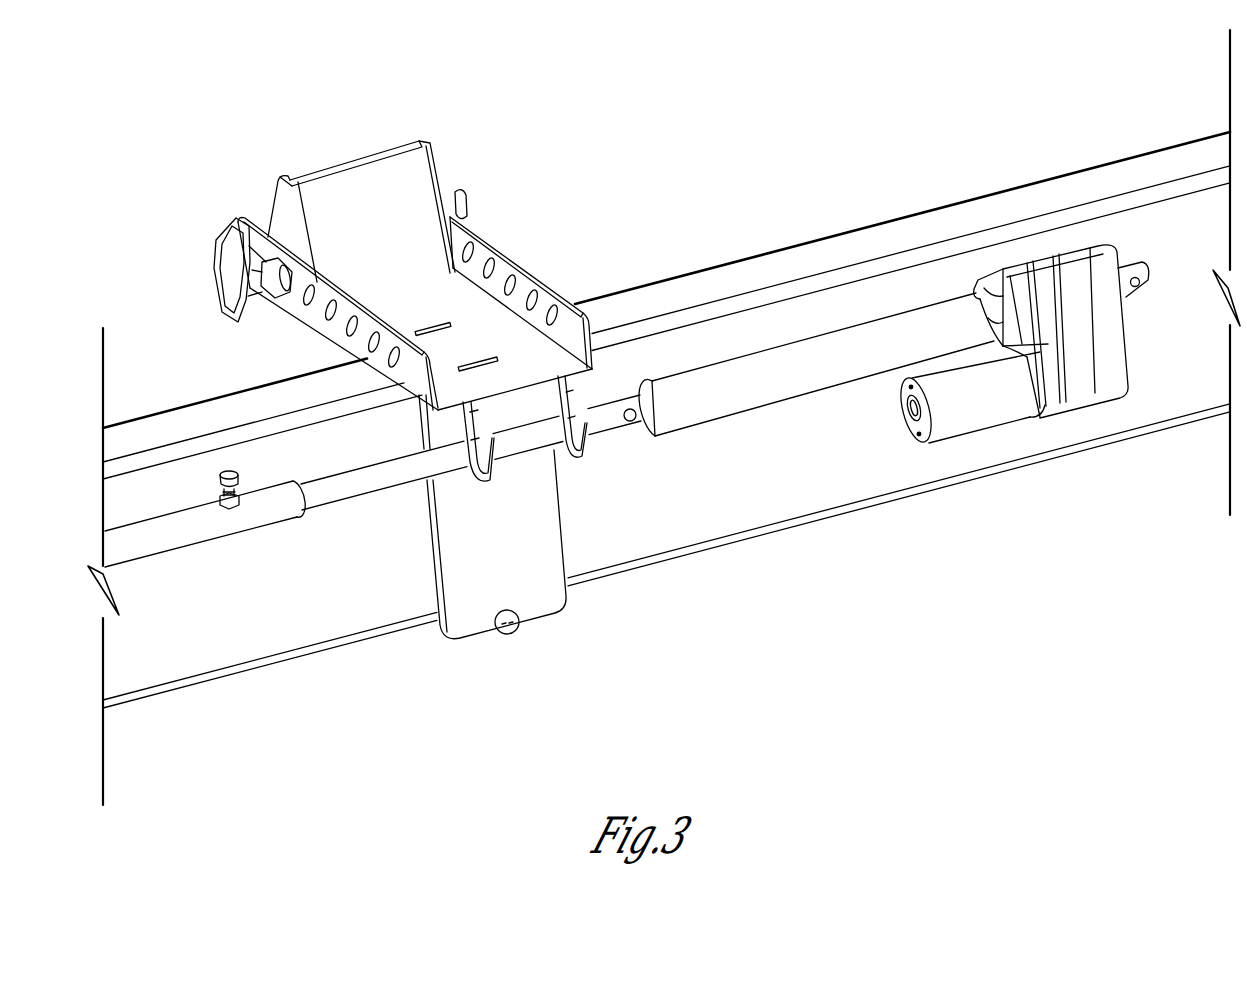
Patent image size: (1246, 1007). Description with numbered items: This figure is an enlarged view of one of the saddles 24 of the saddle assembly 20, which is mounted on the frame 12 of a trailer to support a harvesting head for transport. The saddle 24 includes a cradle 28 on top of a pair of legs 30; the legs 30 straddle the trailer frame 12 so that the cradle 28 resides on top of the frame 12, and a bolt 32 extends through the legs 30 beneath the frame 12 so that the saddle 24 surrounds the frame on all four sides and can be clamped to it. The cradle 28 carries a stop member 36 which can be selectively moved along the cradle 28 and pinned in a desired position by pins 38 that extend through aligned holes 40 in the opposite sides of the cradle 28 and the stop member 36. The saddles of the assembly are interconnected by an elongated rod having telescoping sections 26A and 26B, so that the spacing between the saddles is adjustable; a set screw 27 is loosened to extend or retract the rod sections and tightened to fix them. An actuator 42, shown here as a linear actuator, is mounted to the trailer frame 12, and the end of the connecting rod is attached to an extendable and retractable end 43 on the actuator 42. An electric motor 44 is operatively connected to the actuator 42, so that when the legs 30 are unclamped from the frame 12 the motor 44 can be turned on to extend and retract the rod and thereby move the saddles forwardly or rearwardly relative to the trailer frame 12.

The frame 12 is at (690, 278).
The saddle assembly 20 is at (598, 181).
The saddle 24 is at (414, 309).
The telescoping rod section 26A is at (318, 500).
The telescoping rod section 26B is at (176, 548).
The set screw 27 is at (240, 476).
The cradle 28 is at (390, 290).
The leg 30 is at (513, 521).
The bolt 32 is at (517, 630).
The stop member 36 is at (418, 175).
The pin 38 is at (238, 272).
The hole 40 is at (347, 337).
The actuator 42 is at (770, 397).
The extendable and retractable end 43 is at (606, 404).
The electric motor 44 is at (977, 410).